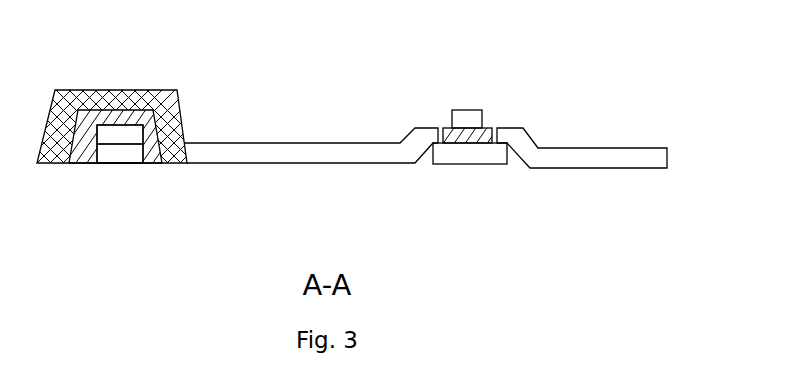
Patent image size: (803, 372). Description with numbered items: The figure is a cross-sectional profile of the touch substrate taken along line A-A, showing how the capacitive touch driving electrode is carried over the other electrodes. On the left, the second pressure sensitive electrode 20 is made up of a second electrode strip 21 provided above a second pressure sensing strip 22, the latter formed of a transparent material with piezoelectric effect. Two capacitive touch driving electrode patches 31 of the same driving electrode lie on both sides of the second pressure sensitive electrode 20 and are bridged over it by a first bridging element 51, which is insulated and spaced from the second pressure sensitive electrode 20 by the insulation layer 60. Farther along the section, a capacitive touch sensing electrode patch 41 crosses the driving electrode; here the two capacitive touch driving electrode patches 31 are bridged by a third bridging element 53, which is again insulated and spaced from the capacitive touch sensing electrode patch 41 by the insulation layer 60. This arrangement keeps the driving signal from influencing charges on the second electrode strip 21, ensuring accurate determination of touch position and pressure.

The second pressure sensitive electrode 20 is at (165, 233).
The second electrode strip 21 is at (123, 135).
The second pressure sensing strip 22 is at (114, 153).
The capacitive touch driving electrode patch 31 is at (298, 143).
The capacitive touch sensing electrode patch 41 is at (467, 108).
The first bridging element 51 is at (103, 97).
The third bridging element 53 is at (482, 158).
The insulation layer 60 is at (130, 117).